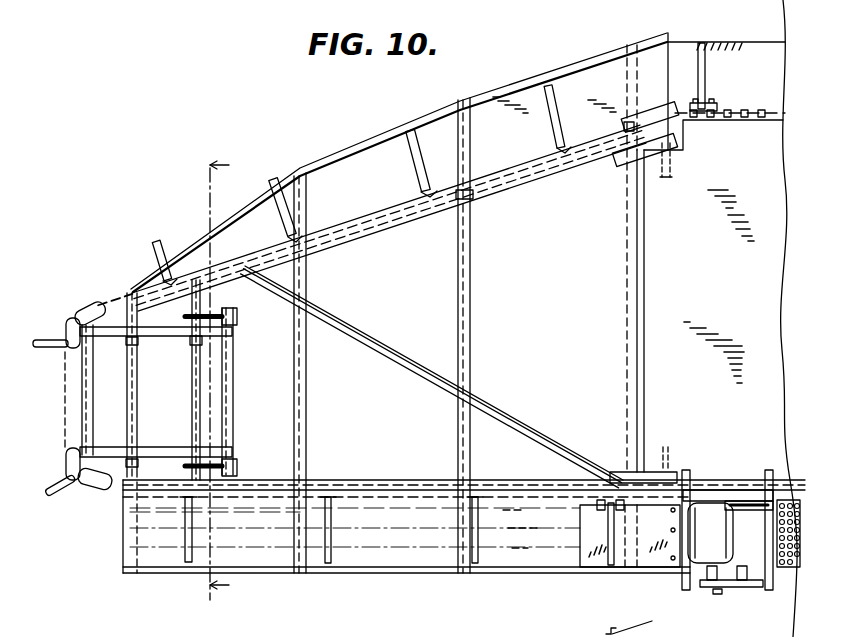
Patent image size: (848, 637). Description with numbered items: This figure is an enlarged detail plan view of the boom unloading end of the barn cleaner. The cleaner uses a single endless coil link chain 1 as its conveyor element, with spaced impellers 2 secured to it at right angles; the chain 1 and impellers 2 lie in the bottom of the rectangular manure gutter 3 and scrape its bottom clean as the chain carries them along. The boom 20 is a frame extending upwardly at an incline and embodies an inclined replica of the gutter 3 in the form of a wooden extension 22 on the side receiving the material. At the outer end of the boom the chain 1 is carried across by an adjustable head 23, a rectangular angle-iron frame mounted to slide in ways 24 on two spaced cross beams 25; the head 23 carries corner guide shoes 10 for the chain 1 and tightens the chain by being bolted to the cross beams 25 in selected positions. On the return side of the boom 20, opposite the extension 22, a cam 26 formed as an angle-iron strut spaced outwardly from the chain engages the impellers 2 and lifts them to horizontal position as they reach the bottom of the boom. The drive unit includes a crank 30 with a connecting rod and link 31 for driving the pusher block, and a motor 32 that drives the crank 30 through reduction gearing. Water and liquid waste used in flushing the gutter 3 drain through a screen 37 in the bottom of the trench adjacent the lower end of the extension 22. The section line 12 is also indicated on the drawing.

The coil link chain 1 is at (742, 112).
The impellers 2 is at (408, 173).
The manure gutter 3 is at (750, 62).
The corner guide shoes 10 is at (72, 318).
The section line 12 is at (212, 378).
The boom 20 is at (376, 479).
The wooden extension 22 is at (403, 553).
The adjustable head 23 is at (86, 394).
The ways 24 is at (188, 342).
The cross beams 25 is at (193, 362).
The cam 26 is at (192, 242).
The crank 30 is at (713, 498).
The connecting rod and link 31 is at (752, 500).
The motor 32 is at (702, 527).
The screen 37 is at (790, 555).